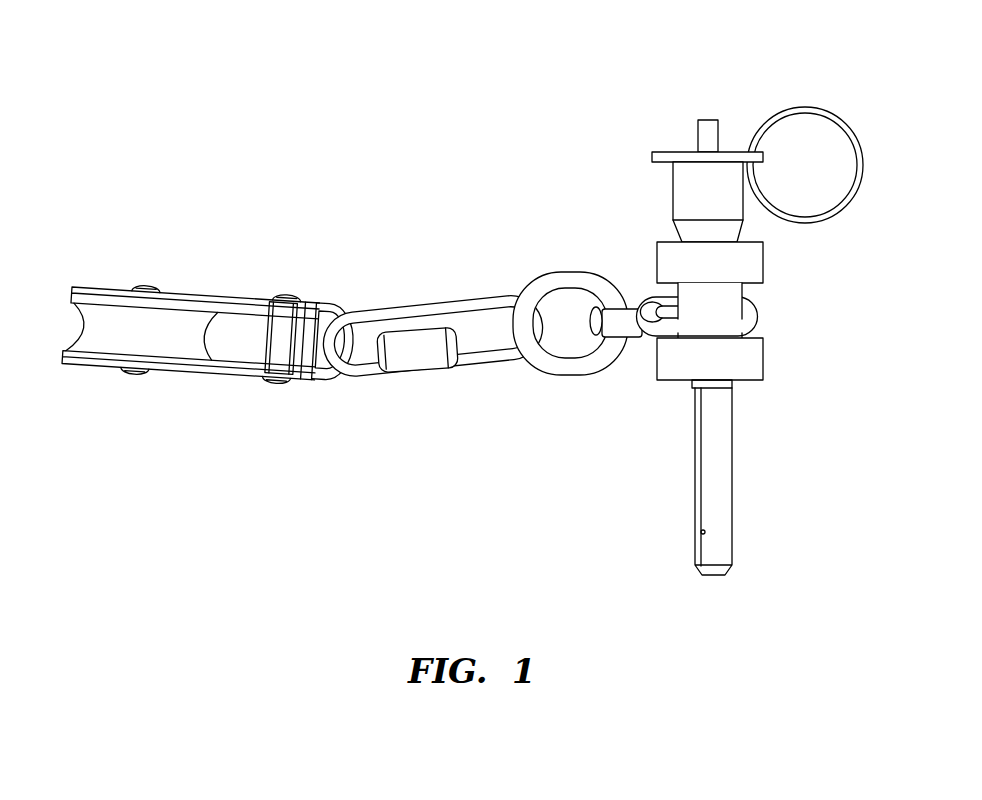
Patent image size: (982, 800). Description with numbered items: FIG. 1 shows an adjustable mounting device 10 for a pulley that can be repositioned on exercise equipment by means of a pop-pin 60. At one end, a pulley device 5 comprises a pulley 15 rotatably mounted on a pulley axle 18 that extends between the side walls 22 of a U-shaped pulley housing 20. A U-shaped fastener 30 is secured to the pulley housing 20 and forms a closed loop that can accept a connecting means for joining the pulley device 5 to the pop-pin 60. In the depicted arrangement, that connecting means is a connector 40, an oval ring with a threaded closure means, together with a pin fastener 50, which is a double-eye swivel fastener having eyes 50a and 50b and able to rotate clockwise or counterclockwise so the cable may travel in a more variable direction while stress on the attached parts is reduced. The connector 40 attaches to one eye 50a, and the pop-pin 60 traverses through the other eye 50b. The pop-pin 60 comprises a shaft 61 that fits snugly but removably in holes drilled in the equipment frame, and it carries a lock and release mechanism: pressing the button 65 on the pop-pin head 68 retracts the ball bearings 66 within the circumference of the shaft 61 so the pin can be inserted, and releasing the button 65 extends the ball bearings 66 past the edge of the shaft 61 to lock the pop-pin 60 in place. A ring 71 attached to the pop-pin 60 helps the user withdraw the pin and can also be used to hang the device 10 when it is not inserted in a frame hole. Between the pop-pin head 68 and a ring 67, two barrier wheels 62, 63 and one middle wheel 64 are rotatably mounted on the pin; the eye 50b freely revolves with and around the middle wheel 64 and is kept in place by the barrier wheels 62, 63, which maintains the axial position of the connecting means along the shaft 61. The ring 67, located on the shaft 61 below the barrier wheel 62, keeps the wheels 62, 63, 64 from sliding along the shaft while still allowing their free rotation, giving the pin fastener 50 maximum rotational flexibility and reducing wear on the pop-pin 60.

The pulley device 5 is at (195, 313).
The adjustable mounting device 10 is at (592, 366).
The pulley 15 is at (176, 339).
The pulley axle 18 is at (148, 285).
The U-shaped pulley housing 20 is at (195, 336).
The side walls 22 is at (97, 288).
The U-shaped fastener 30 is at (331, 302).
The connector 40 is at (472, 359).
The pin fastener 50 is at (648, 290).
The eye 50a is at (565, 272).
The eye 50b is at (757, 321).
The pop-pin 60 is at (726, 304).
The shaft 61 is at (695, 470).
The barrier wheel 62 is at (763, 365).
The barrier wheel 63 is at (763, 263).
The middle wheel 64 is at (742, 297).
The button 65 is at (698, 133).
The ball bearings 66 is at (701, 531).
The ring 67 is at (732, 384).
The pop-pin head 68 is at (673, 187).
The ring 71 is at (804, 107).